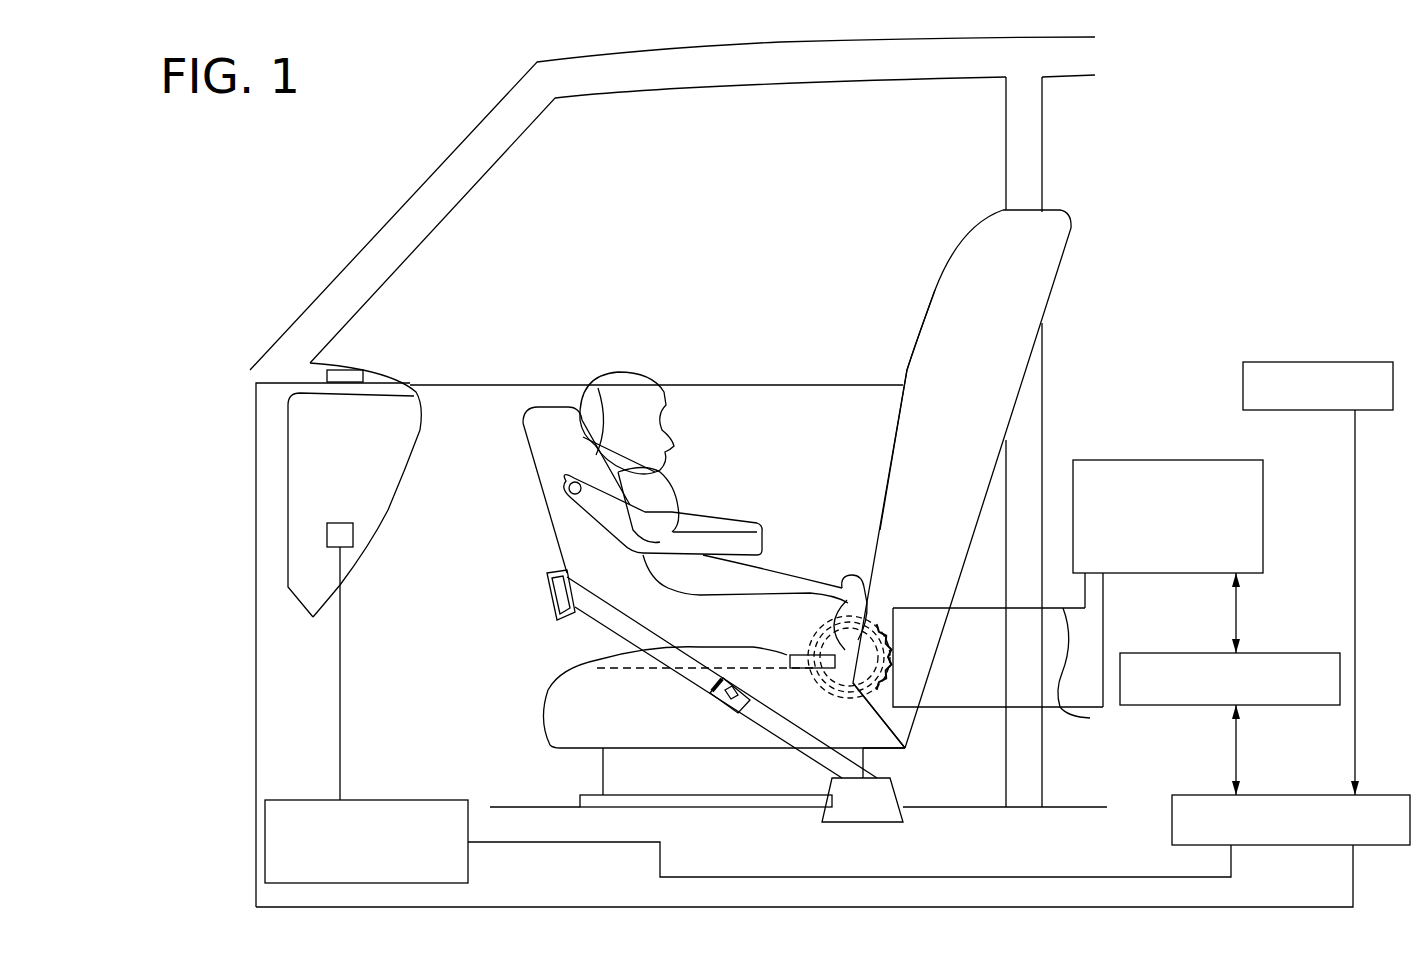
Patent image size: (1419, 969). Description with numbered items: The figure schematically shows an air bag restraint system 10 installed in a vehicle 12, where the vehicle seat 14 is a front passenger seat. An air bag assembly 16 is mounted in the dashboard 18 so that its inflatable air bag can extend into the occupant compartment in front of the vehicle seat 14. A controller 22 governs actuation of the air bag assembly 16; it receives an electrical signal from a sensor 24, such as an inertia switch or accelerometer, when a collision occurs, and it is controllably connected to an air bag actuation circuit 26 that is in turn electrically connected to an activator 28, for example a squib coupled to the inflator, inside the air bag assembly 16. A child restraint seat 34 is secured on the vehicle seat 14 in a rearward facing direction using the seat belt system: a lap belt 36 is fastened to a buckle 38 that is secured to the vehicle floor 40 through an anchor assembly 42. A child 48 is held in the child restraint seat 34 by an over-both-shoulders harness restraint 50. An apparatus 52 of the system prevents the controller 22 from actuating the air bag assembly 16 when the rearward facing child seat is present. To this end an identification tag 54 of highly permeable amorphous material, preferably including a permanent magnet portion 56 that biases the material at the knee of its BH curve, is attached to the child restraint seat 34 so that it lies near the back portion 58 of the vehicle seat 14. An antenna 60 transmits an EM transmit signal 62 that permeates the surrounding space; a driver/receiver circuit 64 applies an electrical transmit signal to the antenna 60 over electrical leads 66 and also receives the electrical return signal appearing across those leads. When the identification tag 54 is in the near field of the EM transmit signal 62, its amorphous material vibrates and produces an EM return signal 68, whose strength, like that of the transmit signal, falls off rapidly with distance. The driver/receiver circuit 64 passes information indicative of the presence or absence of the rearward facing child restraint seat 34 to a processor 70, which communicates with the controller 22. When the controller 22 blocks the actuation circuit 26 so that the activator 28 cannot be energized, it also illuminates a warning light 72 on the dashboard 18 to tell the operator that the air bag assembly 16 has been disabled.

The air bag restraint system 10 is at (1183, 175).
The vehicle 12 is at (393, 228).
The vehicle seat 14 is at (962, 260).
The air bag assembly 16 is at (403, 432).
The dashboard 18 is at (382, 385).
The controller 22 is at (1388, 790).
The sensor 24 is at (1323, 367).
The air bag actuation circuit 26 is at (460, 862).
The activator 28 is at (347, 535).
The child restraint seat 34 is at (543, 415).
The lap belt 36 is at (685, 673).
The buckle 38 is at (733, 707).
The vehicle floor 40 is at (533, 813).
The anchor assembly 42 is at (872, 813).
The child 48 is at (630, 393).
The over-both-shoulders harness restraint 50 is at (605, 407).
The apparatus 52 is at (1095, 385).
The identification tag 54 is at (797, 655).
The permanent magnet portion 56 is at (790, 668).
The back portion 58 is at (903, 447).
The antenna 60 is at (890, 680).
The EM transmit signal 62 is at (880, 617).
The driver/receiver circuit 64 is at (1137, 450).
The electrical leads 66 is at (1090, 718).
The EM return signal 68 is at (880, 747).
The processor 70 is at (1318, 663).
The warning light 72 is at (343, 370).